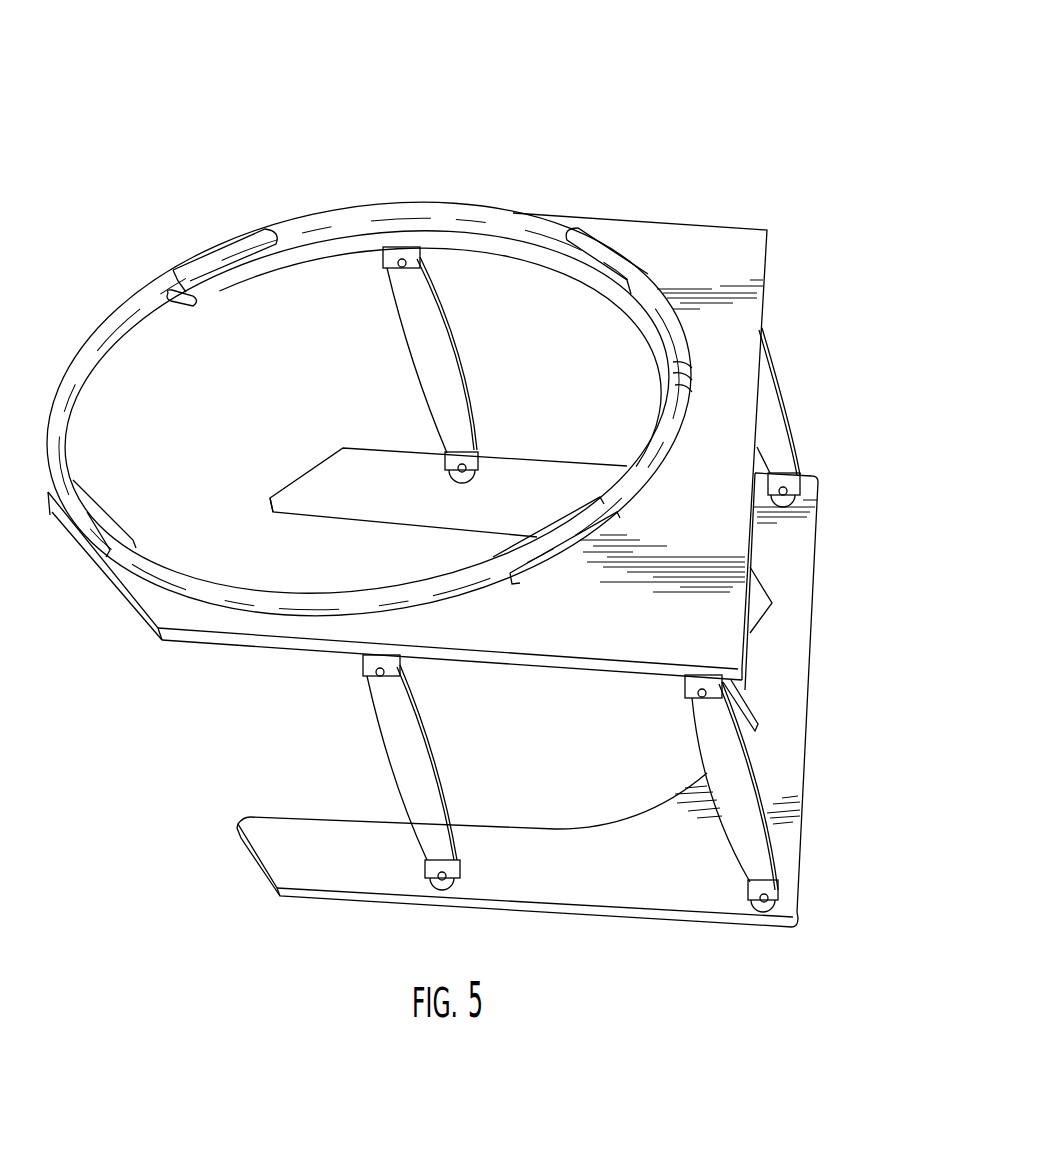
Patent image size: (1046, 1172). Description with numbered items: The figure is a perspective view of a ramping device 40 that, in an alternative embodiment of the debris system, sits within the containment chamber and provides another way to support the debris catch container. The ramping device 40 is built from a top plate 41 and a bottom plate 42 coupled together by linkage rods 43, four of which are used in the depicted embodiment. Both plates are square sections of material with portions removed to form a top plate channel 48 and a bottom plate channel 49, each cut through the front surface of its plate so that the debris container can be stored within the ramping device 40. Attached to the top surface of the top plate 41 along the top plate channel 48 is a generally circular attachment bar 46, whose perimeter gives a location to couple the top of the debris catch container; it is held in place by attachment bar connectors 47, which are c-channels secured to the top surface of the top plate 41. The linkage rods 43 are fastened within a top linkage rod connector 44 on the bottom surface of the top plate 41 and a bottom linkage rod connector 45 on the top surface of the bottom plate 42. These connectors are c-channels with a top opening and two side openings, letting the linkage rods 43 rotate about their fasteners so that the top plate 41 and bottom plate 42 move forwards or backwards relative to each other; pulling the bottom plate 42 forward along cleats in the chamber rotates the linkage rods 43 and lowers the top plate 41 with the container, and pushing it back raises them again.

The ramping device 40 is at (788, 61).
The top plate 41 is at (742, 238).
The bottom plate 42 is at (807, 560).
The linkage rods 43 is at (750, 803).
The top linkage rod connector 44 is at (717, 687).
The bottom linkage rod connector 45 is at (777, 893).
The attachment bar 46 is at (316, 223).
The attachment bar connector 47 is at (213, 275).
The top plate channel 48 is at (182, 303).
The bottom plate channel 49 is at (633, 817).